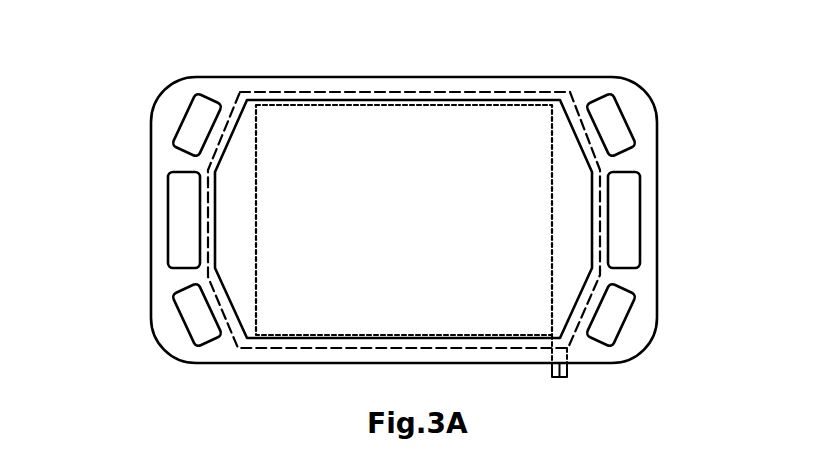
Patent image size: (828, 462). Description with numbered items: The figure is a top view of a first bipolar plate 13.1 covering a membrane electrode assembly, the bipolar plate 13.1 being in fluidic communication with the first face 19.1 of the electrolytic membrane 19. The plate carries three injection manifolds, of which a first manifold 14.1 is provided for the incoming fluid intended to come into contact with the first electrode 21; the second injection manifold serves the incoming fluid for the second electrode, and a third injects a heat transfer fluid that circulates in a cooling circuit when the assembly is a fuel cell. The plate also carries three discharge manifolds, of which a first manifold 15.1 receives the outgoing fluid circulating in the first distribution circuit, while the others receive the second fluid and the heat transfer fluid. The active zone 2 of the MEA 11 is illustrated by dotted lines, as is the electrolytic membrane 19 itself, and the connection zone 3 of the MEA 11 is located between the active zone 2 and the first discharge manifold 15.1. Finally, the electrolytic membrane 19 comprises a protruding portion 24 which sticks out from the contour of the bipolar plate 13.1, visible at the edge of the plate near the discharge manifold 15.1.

The active zone 2 is at (473, 158).
The connection zone 3 is at (565, 158).
The MEA 11 is at (275, 90).
The first bipolar plate 13.1 is at (134, 111).
The first manifold 14.1 is at (210, 100).
The first manifold 15.1 is at (630, 318).
The electrolytic membrane 19 is at (362, 92).
The first face 19.1 is at (313, 88).
The first electrode 21 is at (447, 100).
The protruding portion 24 is at (567, 372).